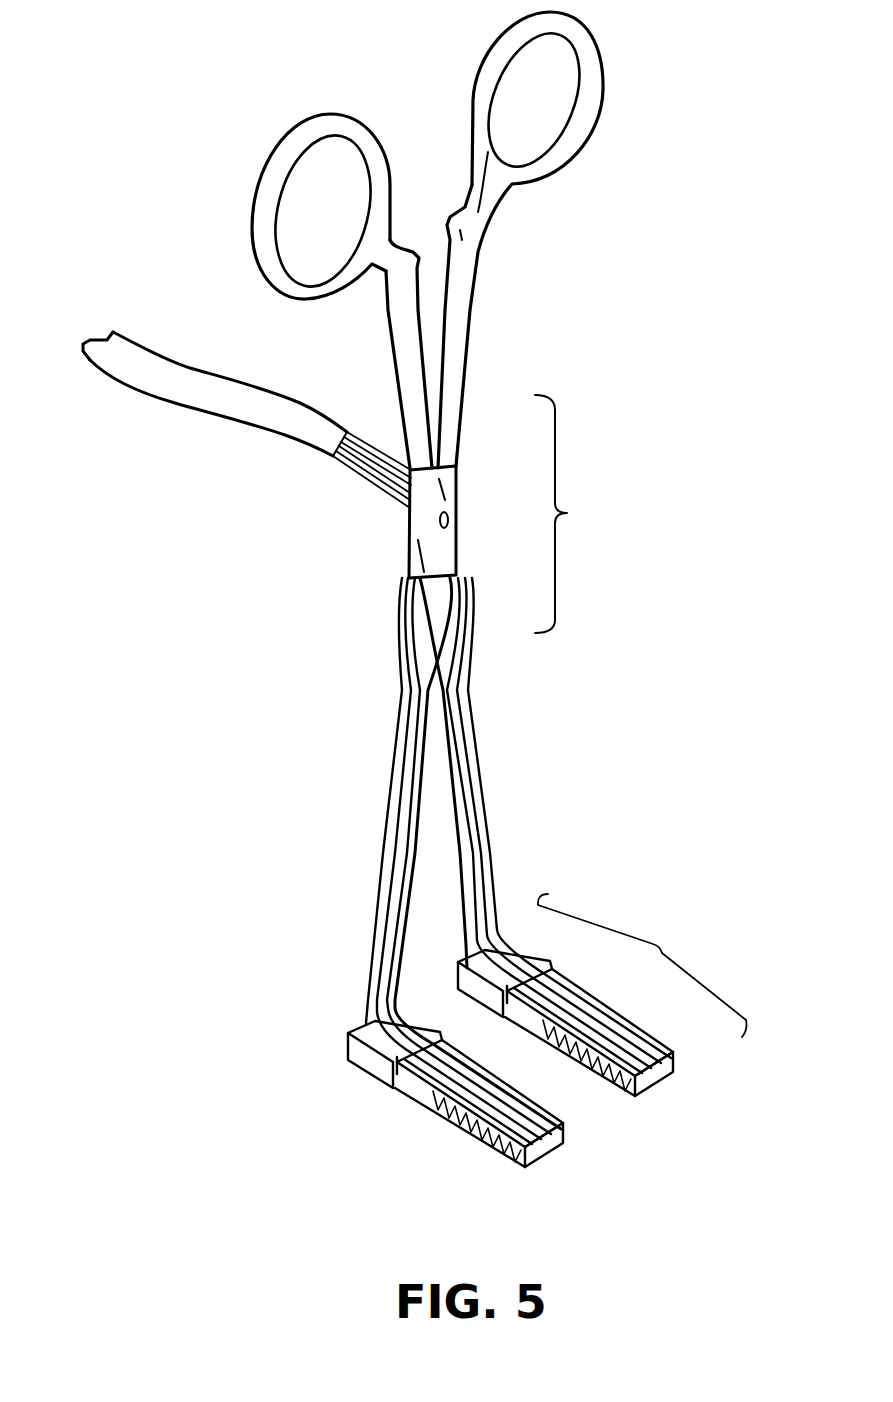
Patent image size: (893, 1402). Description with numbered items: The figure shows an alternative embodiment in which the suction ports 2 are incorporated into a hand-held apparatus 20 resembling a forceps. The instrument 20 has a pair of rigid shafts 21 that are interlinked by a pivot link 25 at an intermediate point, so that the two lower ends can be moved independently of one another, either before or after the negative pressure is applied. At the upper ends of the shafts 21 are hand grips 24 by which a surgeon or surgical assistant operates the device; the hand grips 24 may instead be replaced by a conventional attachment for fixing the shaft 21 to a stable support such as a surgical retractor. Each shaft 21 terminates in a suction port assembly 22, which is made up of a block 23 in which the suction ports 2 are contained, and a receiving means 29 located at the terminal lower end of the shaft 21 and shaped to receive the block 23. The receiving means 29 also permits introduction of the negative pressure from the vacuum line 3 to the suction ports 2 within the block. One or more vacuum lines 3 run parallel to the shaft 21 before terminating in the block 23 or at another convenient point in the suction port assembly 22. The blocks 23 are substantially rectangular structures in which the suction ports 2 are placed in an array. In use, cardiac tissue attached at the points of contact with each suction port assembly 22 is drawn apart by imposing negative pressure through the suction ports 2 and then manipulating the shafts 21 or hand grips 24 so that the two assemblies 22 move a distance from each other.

The suction ports 2 is at (452, 1122).
The vacuum line 3 is at (487, 812).
The hand-held apparatus 20 is at (572, 514).
The shaft 21 is at (400, 720).
The suction port assembly 22 is at (642, 965).
The block 23 is at (548, 1143).
The hand grips 24 is at (263, 197).
The pivot link 25 is at (453, 527).
The receiving means 29 is at (358, 1064).